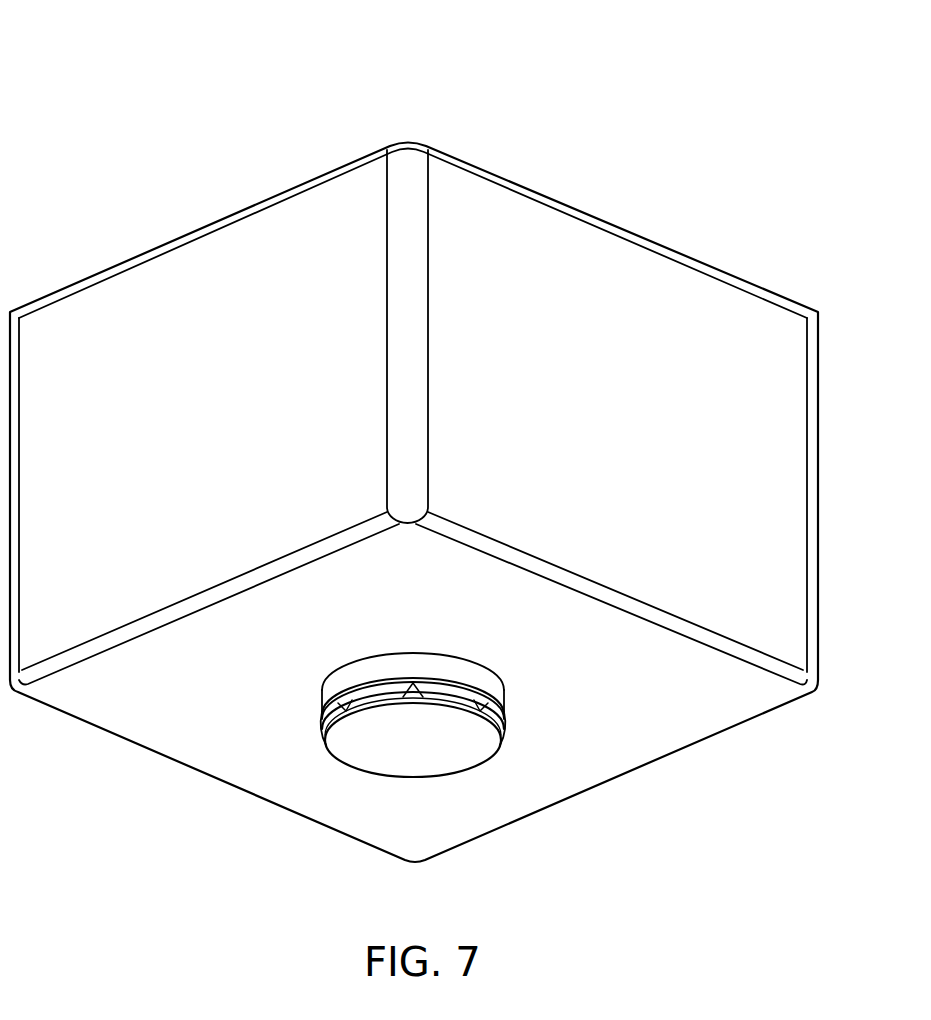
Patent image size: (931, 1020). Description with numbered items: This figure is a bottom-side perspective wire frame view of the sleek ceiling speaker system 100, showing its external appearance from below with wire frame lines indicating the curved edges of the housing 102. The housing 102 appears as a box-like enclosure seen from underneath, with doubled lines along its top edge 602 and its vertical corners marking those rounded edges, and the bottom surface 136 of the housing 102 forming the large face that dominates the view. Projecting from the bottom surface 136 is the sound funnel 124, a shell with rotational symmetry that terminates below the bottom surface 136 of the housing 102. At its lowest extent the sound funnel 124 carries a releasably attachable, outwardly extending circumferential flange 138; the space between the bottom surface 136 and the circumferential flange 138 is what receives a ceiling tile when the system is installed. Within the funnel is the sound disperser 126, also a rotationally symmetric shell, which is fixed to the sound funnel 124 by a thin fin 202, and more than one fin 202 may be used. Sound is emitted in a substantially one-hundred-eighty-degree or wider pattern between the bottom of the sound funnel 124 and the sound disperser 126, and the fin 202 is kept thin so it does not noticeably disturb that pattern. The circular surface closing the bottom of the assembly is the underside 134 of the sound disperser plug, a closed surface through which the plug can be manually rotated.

The sleek ceiling speaker system 100 is at (152, 52).
The housing 102 is at (123, 290).
The top edge of housing 602 is at (298, 183).
The bottom surface 136 is at (652, 736).
The sound funnel 124 is at (326, 684).
The fin 202 is at (347, 690).
The outwardly extending circumferential flange 138 is at (507, 712).
The sound disperser 126 is at (413, 690).
The underside of sound disperser plug 134 is at (447, 757).